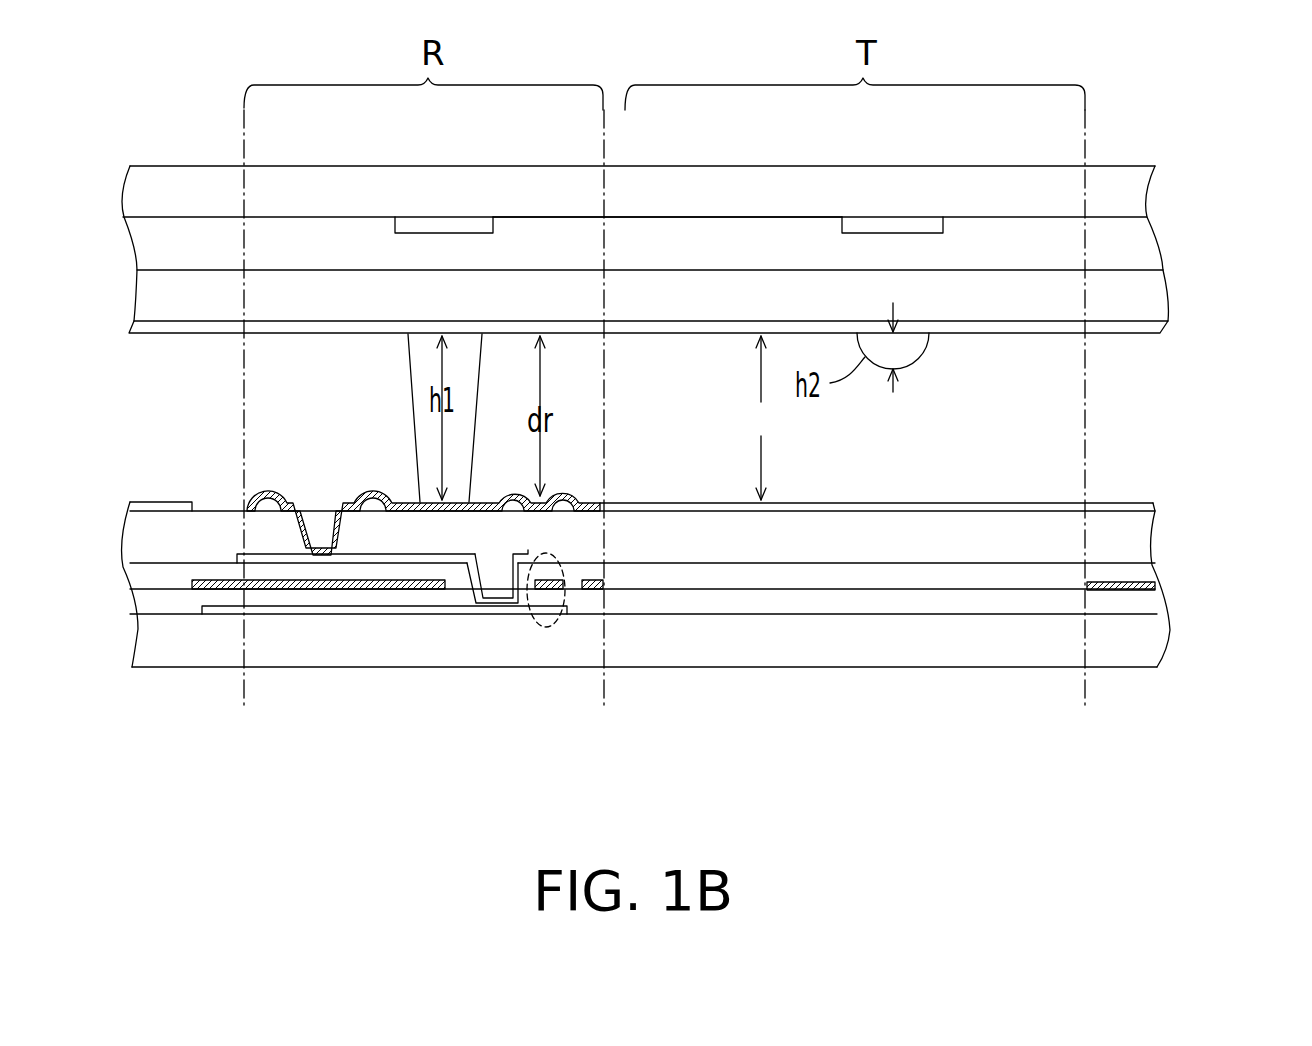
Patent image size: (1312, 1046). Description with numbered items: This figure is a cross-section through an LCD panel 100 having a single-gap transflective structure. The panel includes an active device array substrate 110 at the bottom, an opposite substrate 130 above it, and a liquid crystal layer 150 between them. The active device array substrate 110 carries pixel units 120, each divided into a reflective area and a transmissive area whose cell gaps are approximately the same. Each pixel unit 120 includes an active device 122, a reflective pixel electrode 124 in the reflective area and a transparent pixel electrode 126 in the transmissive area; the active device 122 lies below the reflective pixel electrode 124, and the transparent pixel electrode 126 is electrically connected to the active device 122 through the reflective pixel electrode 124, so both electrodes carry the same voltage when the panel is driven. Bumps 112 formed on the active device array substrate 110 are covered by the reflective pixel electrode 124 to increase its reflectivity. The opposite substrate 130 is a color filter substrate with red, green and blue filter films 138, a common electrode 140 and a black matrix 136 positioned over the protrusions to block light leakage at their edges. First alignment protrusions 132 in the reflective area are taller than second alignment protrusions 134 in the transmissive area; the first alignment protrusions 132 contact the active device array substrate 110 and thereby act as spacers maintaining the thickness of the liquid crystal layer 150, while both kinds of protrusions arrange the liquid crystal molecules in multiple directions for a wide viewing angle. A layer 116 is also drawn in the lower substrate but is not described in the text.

The LCD panel 100 is at (1298, 764).
The active device array substrate 110 is at (936, 683).
The bumps 112 is at (377, 508).
The insulating layer 116 is at (1140, 536).
The pixel unit 120 is at (400, 728).
The active device 122 is at (546, 627).
The reflective pixel electrode 124 is at (455, 511).
The transparent pixel electrode 126 is at (630, 507).
The opposite substrate 130 is at (1152, 153).
The first alignment protrusions 132 is at (410, 353).
The second alignment protrusions 134 is at (913, 353).
The black matrix 136 is at (468, 227).
The filter films 138 is at (693, 227).
The common electrode 140 is at (1160, 328).
The liquid crystal layer 150 is at (1157, 433).